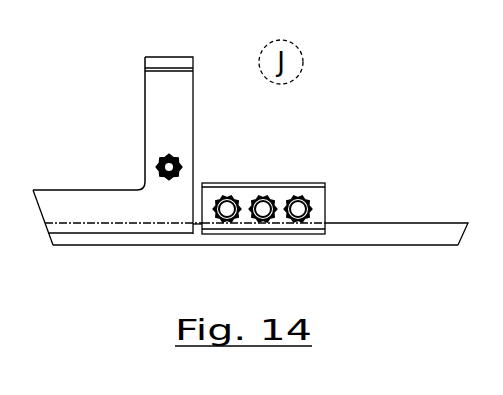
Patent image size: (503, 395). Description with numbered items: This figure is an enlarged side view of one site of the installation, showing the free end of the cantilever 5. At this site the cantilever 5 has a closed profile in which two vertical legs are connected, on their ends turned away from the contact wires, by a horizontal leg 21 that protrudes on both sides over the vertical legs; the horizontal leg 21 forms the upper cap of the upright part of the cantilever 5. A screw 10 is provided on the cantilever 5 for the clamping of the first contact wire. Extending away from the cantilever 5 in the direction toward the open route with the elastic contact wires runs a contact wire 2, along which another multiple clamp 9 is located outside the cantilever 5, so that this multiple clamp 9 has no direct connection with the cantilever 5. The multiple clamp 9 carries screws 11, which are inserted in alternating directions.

The contact wire 2 is at (413, 242).
The cantilever 5 is at (100, 93).
The multiple clamp 9 is at (264, 232).
The screw 10 is at (163, 155).
The screws 11 is at (297, 221).
The horizontal leg 21 is at (178, 63).